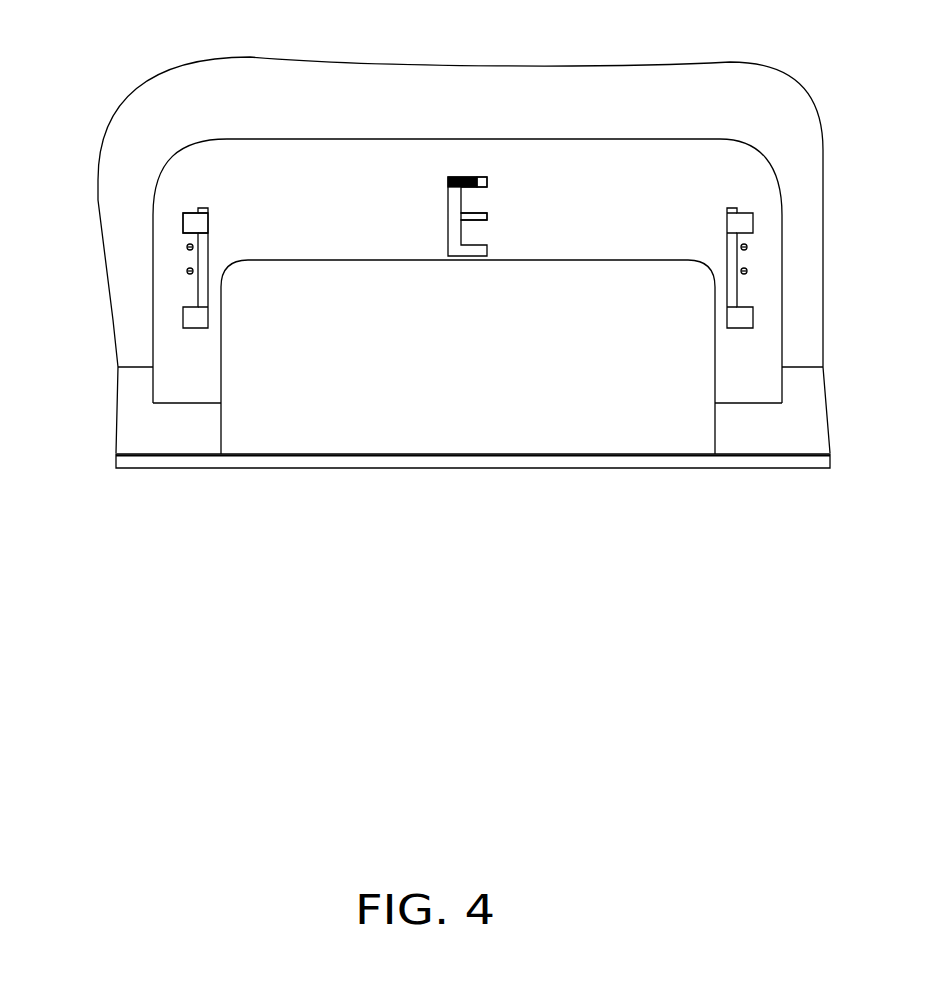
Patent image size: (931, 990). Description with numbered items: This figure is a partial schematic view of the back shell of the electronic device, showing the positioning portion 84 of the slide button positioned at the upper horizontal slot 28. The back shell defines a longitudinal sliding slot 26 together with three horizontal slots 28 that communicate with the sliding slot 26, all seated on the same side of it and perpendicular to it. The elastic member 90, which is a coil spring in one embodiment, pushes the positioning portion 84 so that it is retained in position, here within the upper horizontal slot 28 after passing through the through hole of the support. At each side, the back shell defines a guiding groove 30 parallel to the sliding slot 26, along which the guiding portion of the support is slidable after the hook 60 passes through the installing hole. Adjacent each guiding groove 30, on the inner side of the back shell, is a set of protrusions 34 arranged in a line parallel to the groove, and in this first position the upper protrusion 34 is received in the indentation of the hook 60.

The sliding slot 26 is at (455, 200).
The elastic member 90 is at (452, 177).
The positioning portion 84 is at (482, 180).
The horizontal slots 28 is at (473, 217).
The hook 60 is at (188, 223).
The protrusions 34 is at (187, 248).
The guiding grooves 30 is at (205, 268).